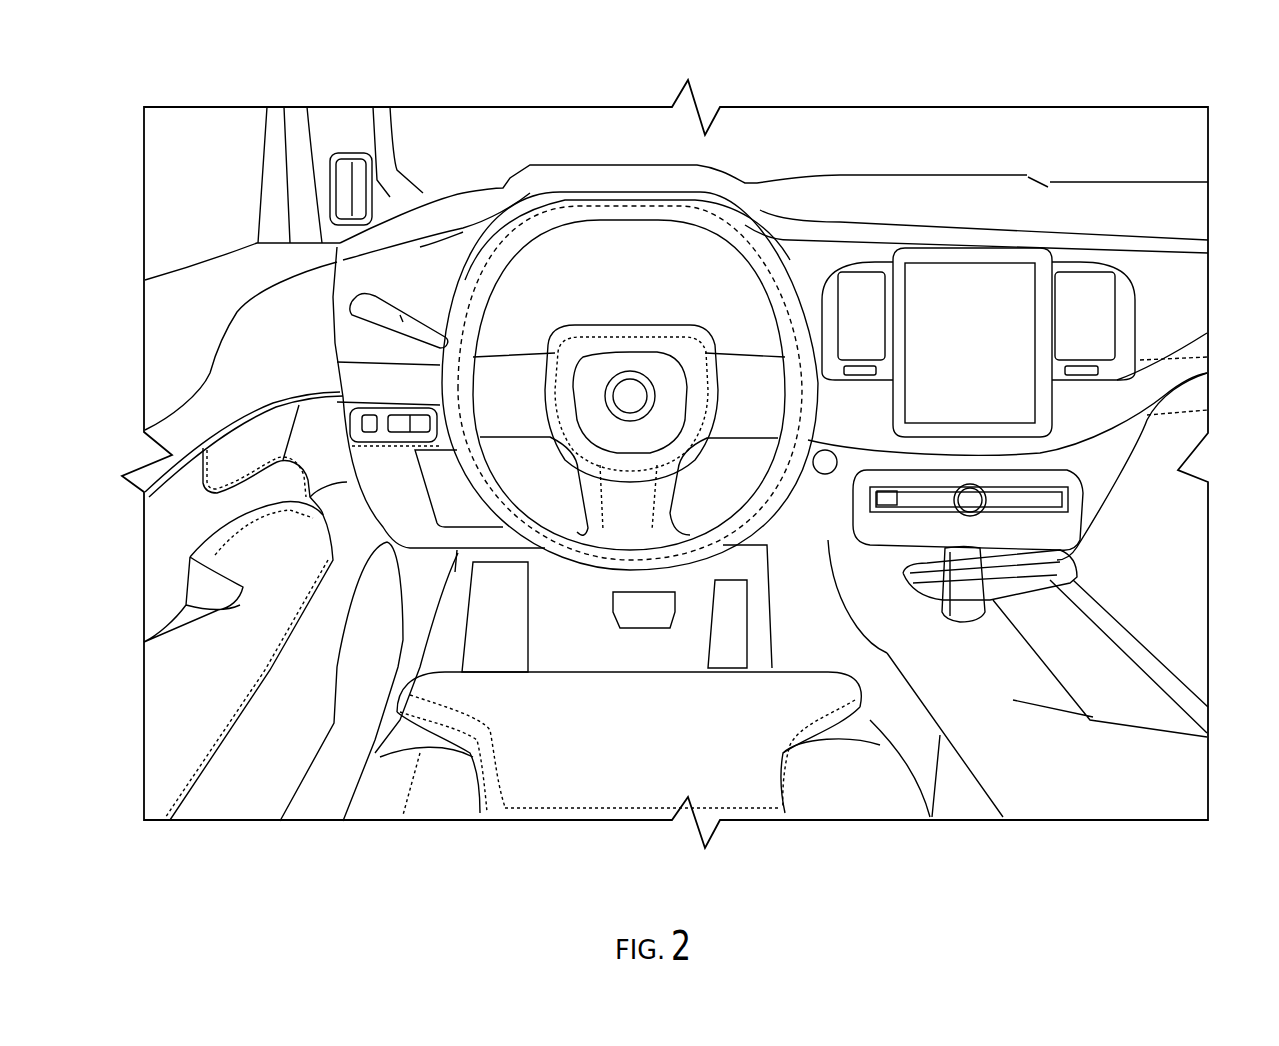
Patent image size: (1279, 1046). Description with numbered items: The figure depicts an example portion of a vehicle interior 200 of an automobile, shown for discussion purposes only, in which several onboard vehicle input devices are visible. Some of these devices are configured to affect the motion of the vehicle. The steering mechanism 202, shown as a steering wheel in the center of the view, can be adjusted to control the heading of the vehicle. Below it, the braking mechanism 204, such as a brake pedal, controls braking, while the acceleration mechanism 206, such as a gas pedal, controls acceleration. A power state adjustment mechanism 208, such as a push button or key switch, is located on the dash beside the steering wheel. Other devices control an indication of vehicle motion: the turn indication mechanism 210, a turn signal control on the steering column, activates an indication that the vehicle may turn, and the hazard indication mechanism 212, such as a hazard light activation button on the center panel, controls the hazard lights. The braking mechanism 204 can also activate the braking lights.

The vehicle interior 200 is at (665, 464).
The steering mechanism 202 is at (727, 240).
The braking mechanism 204 is at (637, 617).
The acceleration mechanism 206 is at (725, 625).
The power state adjustment mechanism 208 is at (823, 453).
The turn indication mechanism 210 is at (400, 313).
The hazard indication mechanism 212 is at (893, 495).